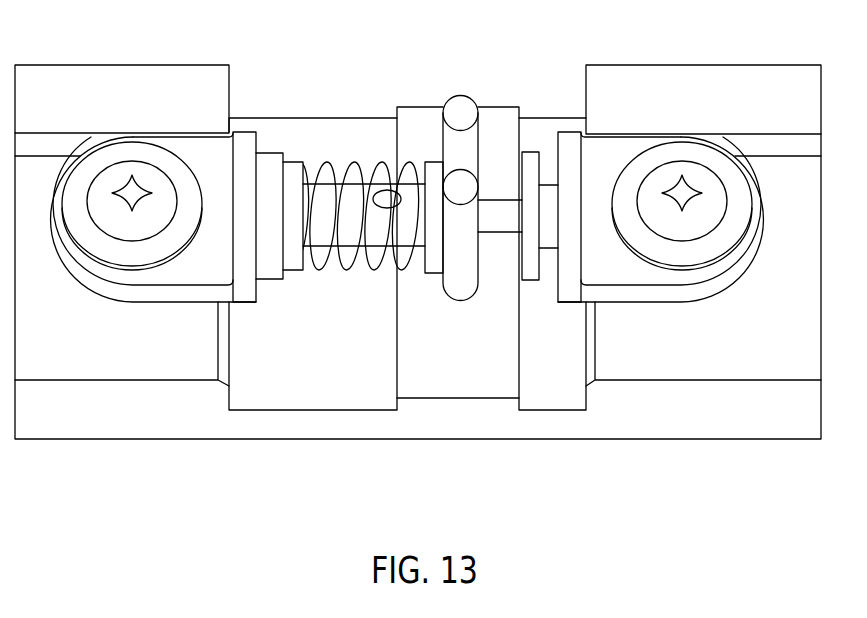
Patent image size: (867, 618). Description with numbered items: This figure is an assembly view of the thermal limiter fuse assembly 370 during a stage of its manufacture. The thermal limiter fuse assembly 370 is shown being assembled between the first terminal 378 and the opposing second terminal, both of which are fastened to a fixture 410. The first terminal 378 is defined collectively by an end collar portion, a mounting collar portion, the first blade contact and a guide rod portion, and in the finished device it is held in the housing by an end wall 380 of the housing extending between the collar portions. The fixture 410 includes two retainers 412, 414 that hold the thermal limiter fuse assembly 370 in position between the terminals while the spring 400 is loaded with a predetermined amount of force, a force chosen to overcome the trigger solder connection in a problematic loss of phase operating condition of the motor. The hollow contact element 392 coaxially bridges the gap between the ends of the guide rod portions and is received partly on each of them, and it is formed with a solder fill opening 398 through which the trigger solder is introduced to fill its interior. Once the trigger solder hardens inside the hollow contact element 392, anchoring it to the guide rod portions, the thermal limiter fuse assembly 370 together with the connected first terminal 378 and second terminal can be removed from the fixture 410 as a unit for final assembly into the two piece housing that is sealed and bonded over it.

The thermal limiter fuse assembly 370 is at (343, 141).
The first terminal 378 is at (635, 140).
The end wall 380 is at (148, 140).
The hollow contact element 392 is at (382, 252).
The solder fill opening 398 is at (377, 191).
The spring 400 is at (339, 268).
The fixture 410 is at (774, 63).
The retainer 412 is at (460, 110).
The retainer 414 is at (461, 186).